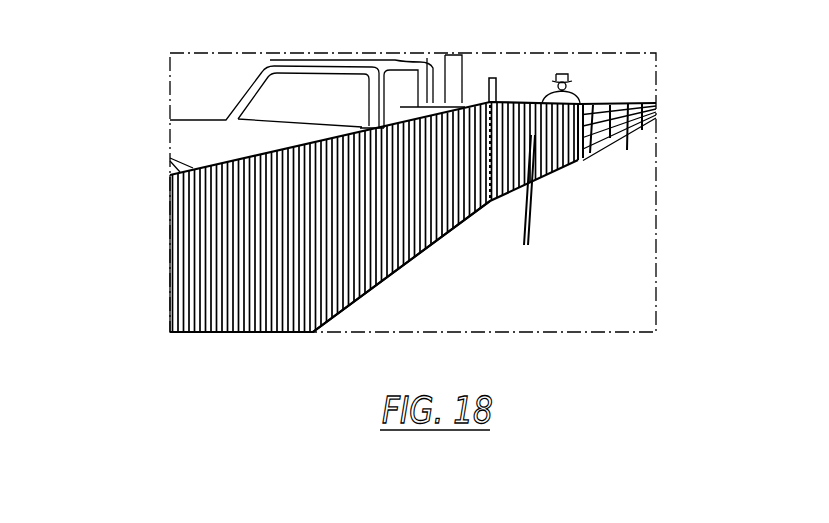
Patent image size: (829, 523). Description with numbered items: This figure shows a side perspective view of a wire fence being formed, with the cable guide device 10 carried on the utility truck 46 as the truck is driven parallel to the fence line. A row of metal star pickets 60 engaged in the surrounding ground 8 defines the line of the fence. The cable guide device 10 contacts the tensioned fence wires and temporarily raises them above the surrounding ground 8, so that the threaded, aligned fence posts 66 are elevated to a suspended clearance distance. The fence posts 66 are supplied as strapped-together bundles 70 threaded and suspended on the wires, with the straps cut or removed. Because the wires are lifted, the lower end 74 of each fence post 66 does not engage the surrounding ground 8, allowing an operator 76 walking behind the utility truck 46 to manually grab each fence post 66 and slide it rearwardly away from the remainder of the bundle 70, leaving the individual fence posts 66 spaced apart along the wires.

The surrounding ground 8 is at (587, 282).
The cable guide device 10 is at (497, 79).
The utility truck 46 is at (193, 137).
The star pickets 60 is at (627, 132).
The fence posts 66 is at (257, 287).
The bundles of fence posts 70 is at (213, 287).
The lower end of the fence post 74 is at (353, 303).
The operator 76 is at (573, 100).